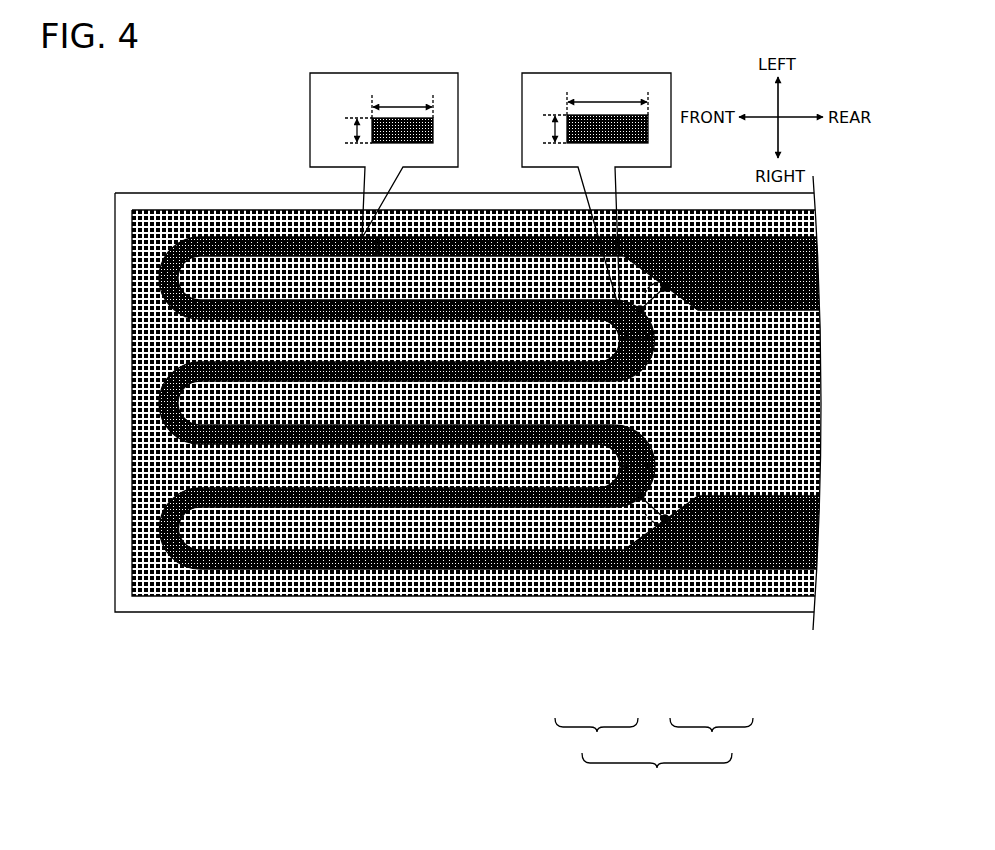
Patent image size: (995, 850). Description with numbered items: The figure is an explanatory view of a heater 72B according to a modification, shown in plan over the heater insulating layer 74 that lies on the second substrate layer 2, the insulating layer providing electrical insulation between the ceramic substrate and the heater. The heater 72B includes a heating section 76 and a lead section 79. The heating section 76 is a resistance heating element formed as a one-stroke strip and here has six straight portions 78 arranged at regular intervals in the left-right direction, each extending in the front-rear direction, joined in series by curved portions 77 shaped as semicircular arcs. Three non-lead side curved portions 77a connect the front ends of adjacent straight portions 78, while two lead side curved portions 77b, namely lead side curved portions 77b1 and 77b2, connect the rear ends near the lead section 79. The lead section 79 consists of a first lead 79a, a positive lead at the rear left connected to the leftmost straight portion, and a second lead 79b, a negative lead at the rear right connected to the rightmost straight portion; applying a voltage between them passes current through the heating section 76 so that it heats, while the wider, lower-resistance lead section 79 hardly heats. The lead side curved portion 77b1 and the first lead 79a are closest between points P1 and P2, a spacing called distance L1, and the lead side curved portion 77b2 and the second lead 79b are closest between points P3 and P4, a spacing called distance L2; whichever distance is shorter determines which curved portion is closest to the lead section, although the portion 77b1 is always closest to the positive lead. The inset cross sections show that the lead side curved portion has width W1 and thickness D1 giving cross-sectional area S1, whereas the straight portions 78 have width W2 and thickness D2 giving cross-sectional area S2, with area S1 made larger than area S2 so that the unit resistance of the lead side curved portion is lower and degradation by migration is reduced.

The second substrate layer 2 is at (170, 599).
The heater insulating layer 74 is at (216, 586).
The heater 72B is at (657, 772).
The heating section 76 is at (596, 735).
The curved portions 77 is at (497, 478).
The non-lead side curved portions 77a is at (169, 278).
The lead side curved portion 77b is at (632, 637).
The lead side curved portion 77b1 is at (620, 317).
The lead side curved portion 77b2 is at (632, 486).
The straight portions 78 is at (277, 306).
The lead section 79 is at (711, 735).
The first lead 79a is at (719, 292).
The second lead 79b is at (742, 517).
The point P1 is at (634, 301).
The point P2 is at (673, 280).
The point P3 is at (638, 505).
The point P4 is at (670, 527).
The distance L1 is at (657, 301).
The distance L2 is at (659, 504).
The width W1 is at (596, 269).
The width W2 is at (384, 164).
The thickness D1 is at (547, 129).
The thickness D2 is at (349, 130).
The cross-sectional area S1 is at (607, 129).
The cross-sectional area S2 is at (402, 130).